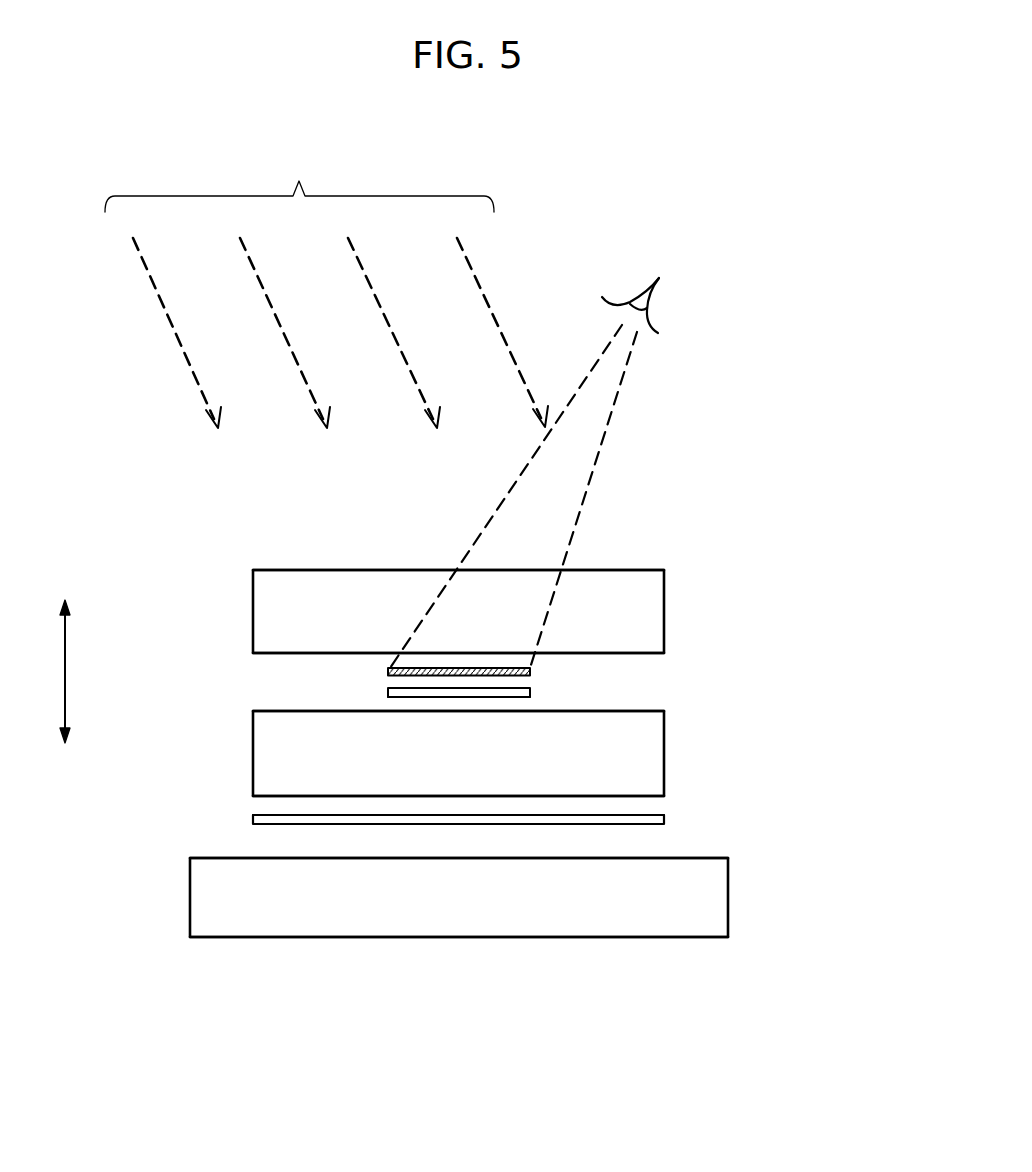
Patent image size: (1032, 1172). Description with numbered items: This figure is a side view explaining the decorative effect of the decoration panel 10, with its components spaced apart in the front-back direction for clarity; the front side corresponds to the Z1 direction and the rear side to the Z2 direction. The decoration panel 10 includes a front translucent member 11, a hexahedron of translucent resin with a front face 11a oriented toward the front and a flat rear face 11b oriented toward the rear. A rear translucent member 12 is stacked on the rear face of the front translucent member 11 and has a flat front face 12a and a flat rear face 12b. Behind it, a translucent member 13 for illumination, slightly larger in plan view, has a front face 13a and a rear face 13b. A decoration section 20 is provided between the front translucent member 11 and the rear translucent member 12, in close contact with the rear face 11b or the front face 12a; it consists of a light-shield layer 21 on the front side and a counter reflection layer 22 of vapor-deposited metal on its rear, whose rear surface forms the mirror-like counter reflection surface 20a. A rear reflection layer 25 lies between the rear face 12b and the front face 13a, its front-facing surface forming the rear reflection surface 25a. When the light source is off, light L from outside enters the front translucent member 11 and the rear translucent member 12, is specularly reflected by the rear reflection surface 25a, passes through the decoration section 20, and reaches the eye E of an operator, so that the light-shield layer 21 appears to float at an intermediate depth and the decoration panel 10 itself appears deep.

The decoration panel 10 is at (818, 545).
The front translucent member 11 is at (664, 572).
The front face 11a is at (300, 570).
The rear face 11b is at (280, 654).
The rear translucent member 12 is at (262, 765).
The front face 12a is at (277, 711).
The rear face 12b is at (273, 796).
The translucent member for illumination 13 is at (728, 883).
The front face 13a is at (525, 858).
The rear face 13b is at (423, 937).
The decoration section 20 is at (524, 708).
The counter reflection surface 20a is at (490, 691).
The light-shield layer 21 is at (530, 672).
The counter reflection layer 22 is at (530, 692).
The rear reflection layer 25 is at (664, 818).
The rear reflection surface 25a is at (373, 810).
The light L is at (299, 180).
The eye E is at (643, 300).
The Z1 direction Z1 is at (69, 651).
The Z2 direction Z2 is at (69, 753).